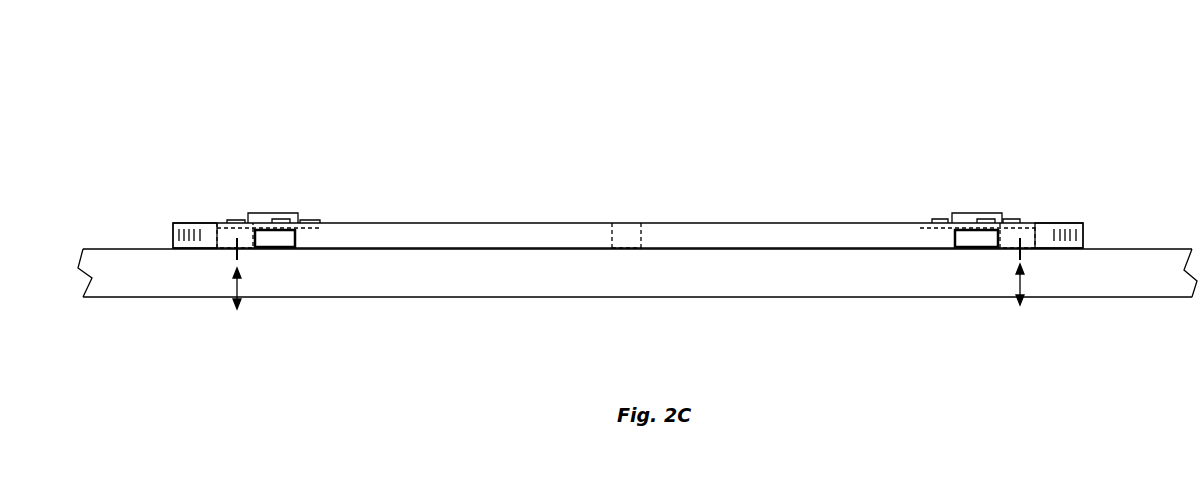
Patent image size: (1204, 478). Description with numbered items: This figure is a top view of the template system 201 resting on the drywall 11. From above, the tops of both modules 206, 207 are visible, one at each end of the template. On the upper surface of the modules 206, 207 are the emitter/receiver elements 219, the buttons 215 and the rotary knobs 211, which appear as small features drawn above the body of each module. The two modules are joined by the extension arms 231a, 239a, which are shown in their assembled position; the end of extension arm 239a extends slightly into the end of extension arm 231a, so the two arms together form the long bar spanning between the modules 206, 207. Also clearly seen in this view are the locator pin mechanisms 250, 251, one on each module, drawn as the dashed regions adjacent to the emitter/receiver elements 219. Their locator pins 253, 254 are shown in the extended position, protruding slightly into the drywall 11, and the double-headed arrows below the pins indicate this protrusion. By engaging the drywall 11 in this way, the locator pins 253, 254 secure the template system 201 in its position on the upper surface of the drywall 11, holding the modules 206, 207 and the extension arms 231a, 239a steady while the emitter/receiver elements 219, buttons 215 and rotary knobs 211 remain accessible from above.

The drywall 11 is at (680, 277).
The template system 201 is at (602, 116).
The module 206 is at (363, 224).
The module 207 is at (902, 224).
The rotary knob 211 is at (278, 213).
The button 215 is at (236, 221).
The emitter/receiver element 219 is at (173, 232).
The locator pin mechanism 250 is at (235, 228).
The locator pin mechanism 251 is at (1038, 238).
The locator pin 253 is at (1020, 250).
The locator pin 254 is at (235, 257).
The extension arm 231a is at (762, 252).
The extension arm 239a is at (382, 252).